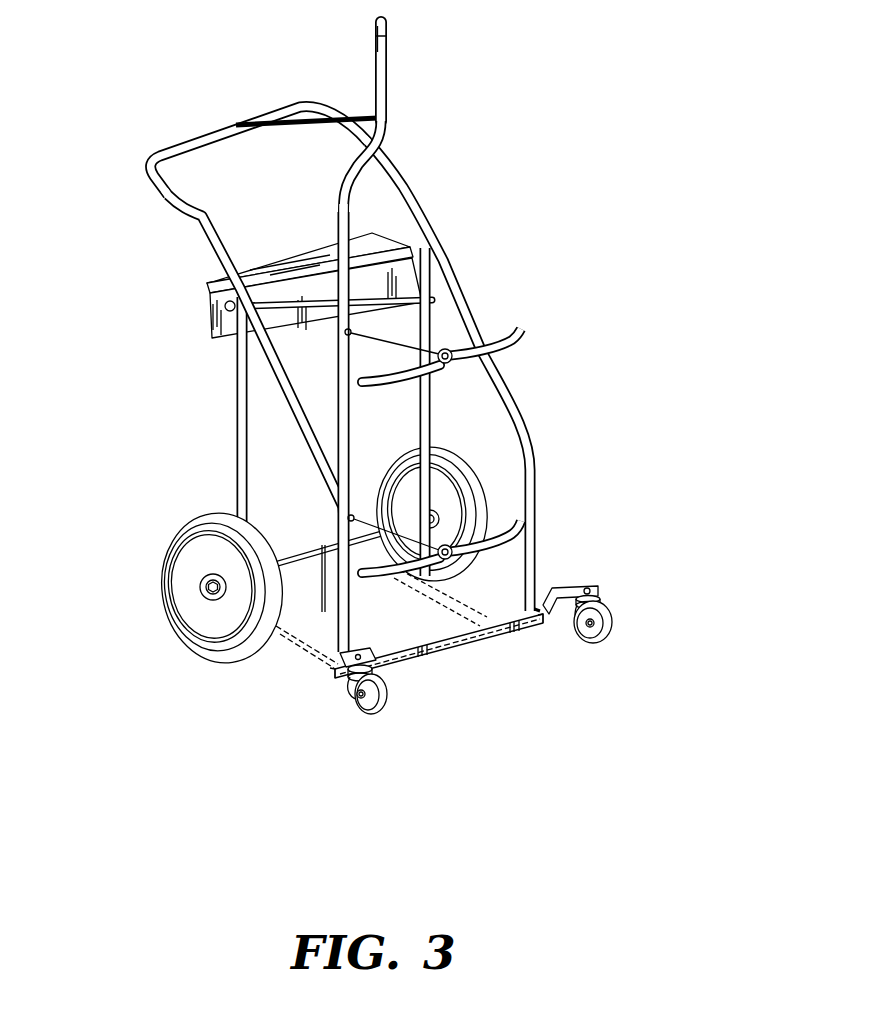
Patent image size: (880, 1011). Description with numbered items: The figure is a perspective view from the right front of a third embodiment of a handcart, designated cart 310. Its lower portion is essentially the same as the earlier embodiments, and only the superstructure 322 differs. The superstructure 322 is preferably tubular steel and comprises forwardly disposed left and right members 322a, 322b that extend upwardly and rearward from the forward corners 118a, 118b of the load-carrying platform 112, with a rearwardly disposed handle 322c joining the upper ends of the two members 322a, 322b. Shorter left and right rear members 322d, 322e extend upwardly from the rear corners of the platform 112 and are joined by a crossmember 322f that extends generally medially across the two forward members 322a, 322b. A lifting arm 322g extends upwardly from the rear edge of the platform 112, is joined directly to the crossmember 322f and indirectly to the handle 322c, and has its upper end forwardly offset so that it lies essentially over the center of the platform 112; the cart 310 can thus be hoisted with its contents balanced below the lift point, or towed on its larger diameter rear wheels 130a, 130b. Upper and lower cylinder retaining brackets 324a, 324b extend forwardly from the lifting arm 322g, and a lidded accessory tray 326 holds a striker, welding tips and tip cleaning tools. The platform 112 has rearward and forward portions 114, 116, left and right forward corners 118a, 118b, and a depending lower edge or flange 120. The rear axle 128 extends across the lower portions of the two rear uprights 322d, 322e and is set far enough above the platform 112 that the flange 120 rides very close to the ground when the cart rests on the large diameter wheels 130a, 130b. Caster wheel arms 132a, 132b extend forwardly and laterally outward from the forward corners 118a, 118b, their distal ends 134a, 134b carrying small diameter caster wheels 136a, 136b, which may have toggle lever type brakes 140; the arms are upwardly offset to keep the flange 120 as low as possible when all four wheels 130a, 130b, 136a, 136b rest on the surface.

The handcart 310 is at (100, 705).
The superstructure 322 is at (482, 276).
The left forward member 322a is at (518, 413).
The right forward member 322b is at (287, 400).
The handle 322c is at (193, 135).
The left rear member 322d is at (417, 393).
The right rear member 322e is at (237, 426).
The crossmember 322f is at (392, 260).
The lifting arm 322g is at (388, 76).
The upper cylinder retaining bracket 324a is at (525, 332).
The lower cylinder retaining bracket 324b is at (526, 494).
The accessory tray 326 is at (287, 258).
The rear wheel 130a is at (471, 456).
The rear wheel 130b is at (162, 592).
The rear axle 128 is at (294, 557).
The rearward portion 114 is at (323, 545).
The load-carrying platform 112 is at (418, 620).
The forward portion 116 is at (457, 620).
The forward corner 118a is at (553, 625).
The forward corner 118b is at (335, 677).
The depending lower edge 120 is at (265, 668).
The caster wheel arm 132a is at (553, 585).
The caster wheel arm 132b is at (322, 668).
The distal end 134a is at (594, 588).
The distal end 134b is at (365, 648).
The caster wheel 136a is at (578, 628).
The caster wheel 136b is at (388, 698).
The toggle lever type brake 140 is at (360, 697).